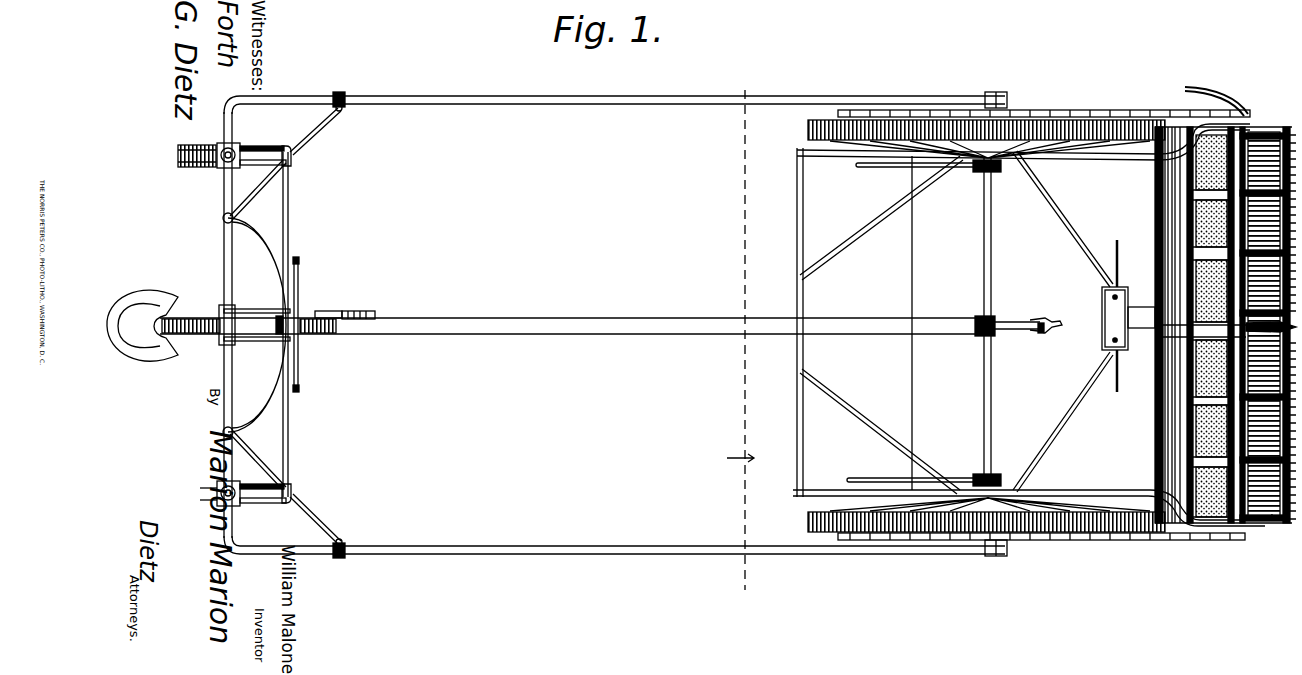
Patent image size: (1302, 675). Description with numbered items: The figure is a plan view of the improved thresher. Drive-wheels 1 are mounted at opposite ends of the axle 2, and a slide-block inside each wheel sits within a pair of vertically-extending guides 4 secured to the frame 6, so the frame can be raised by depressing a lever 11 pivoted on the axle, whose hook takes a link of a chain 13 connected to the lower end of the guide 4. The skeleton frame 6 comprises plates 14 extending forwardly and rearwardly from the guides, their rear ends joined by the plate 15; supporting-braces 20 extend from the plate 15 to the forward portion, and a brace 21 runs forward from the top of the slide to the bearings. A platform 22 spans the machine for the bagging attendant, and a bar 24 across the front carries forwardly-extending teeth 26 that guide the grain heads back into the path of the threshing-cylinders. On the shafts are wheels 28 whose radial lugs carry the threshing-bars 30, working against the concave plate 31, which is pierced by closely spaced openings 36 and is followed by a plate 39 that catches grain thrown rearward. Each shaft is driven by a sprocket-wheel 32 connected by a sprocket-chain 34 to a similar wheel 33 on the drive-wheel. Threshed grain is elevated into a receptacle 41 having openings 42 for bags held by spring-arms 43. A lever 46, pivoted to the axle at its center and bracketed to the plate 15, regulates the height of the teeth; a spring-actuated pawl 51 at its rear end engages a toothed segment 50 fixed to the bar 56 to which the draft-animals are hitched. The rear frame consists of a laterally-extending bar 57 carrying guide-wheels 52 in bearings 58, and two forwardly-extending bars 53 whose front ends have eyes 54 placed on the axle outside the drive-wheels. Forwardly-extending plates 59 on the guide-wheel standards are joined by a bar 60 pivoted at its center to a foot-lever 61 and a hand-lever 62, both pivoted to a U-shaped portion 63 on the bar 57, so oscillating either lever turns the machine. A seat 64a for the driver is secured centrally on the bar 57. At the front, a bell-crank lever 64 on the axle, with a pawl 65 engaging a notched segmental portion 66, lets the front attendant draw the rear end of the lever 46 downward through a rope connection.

The drive-wheels 1 is at (1042, 124).
The axle 2 is at (993, 402).
The vertically-extending guides 4 is at (740, 341).
The frame 6 is at (805, 292).
The lever 11 is at (957, 170).
The chain 13 is at (1006, 172).
The plates 14 is at (841, 157).
The plate 15 is at (804, 216).
The supporting-braces 20 is at (868, 226).
The brace 21 is at (1112, 164).
The platform 22 is at (1112, 343).
The bar 24 is at (1226, 290).
The teeth 26 is at (1285, 528).
The wheels 28 is at (1262, 127).
The threshing-bars 30 is at (1194, 226).
The concave plate 31 is at (1192, 177).
The sprocket-wheel 32 is at (1237, 104).
The wheel 33 is at (1012, 111).
The sprocket-chain 34 is at (1105, 111).
The openings 36 is at (1182, 366).
The plate 39 is at (1170, 250).
The receptacle 41 is at (1103, 317).
The openings 42 is at (1102, 294).
The spring-arms 43 is at (1115, 251).
The lever 46 is at (675, 330).
The toothed segment 50 is at (363, 311).
The spring-actuated pawl 51 is at (330, 311).
The guide-wheels 52 is at (262, 148).
The forwardly-extending bars 53 is at (523, 105).
The eye 54 is at (995, 92).
The bar 56 is at (279, 240).
The laterally-extending bar 57 is at (233, 266).
The bearings 58 is at (221, 146).
The forwardly-extending plates 59 is at (292, 158).
The bar 60 is at (290, 206).
The foot-lever 61 is at (300, 268).
The hand-lever 62 is at (276, 333).
The U-shaped portion 63 is at (251, 311).
The bell-crank lever 64 is at (1030, 333).
The seat 64a is at (148, 341).
The pawl 65 is at (1043, 320).
The segmental portion 66 is at (1008, 318).